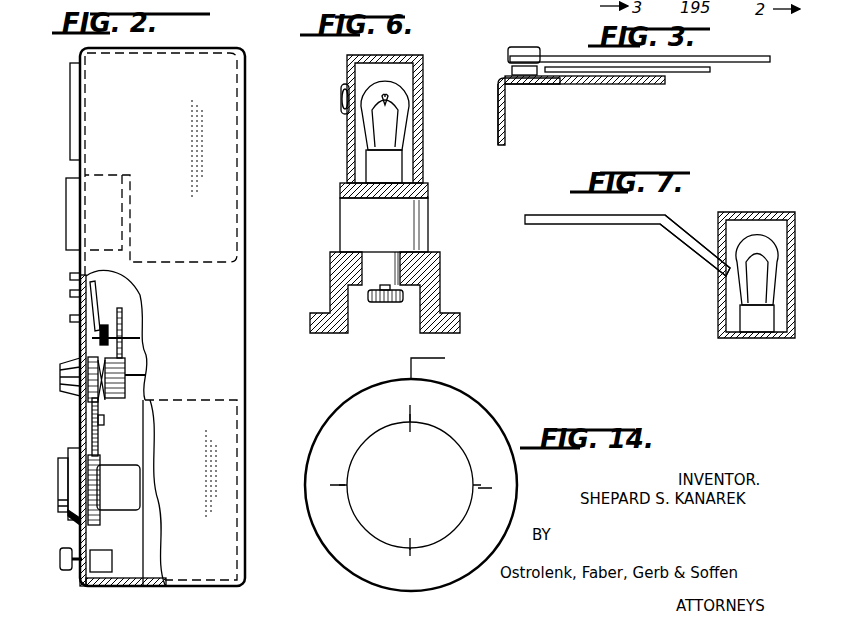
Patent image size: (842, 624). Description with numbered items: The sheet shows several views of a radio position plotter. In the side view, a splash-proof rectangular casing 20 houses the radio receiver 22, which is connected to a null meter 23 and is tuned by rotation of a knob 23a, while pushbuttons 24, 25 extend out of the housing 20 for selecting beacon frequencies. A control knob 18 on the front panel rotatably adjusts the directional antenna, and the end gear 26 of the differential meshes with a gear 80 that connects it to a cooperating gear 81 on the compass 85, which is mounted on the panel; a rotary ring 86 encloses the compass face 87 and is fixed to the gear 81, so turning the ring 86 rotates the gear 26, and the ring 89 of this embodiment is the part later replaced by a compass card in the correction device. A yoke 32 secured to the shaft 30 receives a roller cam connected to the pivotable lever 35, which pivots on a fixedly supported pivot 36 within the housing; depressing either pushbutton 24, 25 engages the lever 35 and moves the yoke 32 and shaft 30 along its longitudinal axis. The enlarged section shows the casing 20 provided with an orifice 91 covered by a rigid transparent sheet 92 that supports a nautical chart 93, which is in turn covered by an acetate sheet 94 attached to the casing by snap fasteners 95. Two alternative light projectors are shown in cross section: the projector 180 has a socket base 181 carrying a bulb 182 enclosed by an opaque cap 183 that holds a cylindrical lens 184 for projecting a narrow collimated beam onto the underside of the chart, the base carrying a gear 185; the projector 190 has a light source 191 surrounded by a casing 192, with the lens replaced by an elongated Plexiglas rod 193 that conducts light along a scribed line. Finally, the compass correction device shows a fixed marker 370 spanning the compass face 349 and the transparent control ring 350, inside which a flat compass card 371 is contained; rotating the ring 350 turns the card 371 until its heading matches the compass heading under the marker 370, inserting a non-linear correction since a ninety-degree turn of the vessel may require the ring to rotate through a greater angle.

In FIG. 2, the radio receiver 22 is at (223, 165).
In FIG. 2, the null meter 23 is at (66, 210).
In FIG. 2, the knob 23a is at (70, 276).
In FIG. 2, the pushbutton 24 is at (70, 293).
In FIG. 2, the pushbutton 25 is at (70, 318).
In FIG. 2, the casing 20 is at (80, 406).
In FIG. 3, the casing 20 is at (505, 132).
In FIG. 2, the shaft 30 is at (145, 345).
In FIG. 2, the pivot 36 is at (102, 298).
In FIG. 2, the pivotable lever 35 is at (100, 312).
In FIG. 2, the yoke 32 is at (90, 338).
In FIG. 2, the end gear 26 is at (106, 360).
In FIG. 2, the control knob 18 is at (60, 376).
In FIG. 2, the gear 80 is at (100, 410).
In FIG. 2, the ring 89 is at (76, 440).
In FIG. 2, the compass face 87 is at (56, 465).
In FIG. 2, the compass 85 is at (56, 492).
In FIG. 2, the rotary ring 86 is at (70, 520).
In FIG. 2, the gear 81 is at (100, 517).
In FIG. 6, the light projector 180 is at (346, 165).
In FIG. 6, the bulb 182 is at (405, 86).
In FIG. 6, the opaque cap 183 is at (424, 148).
In FIG. 6, the cylindrical lens 184 is at (342, 100).
In FIG. 6, the socket base 181 is at (340, 228).
In FIG. 6, the gear 185 is at (382, 303).
In FIG. 3, the orifice 91 is at (504, 102).
In FIG. 3, the transparent sheet 92 is at (622, 86).
In FIG. 3, the nautical chart 93 is at (690, 74).
In FIG. 3, the acetate sheet 94 is at (750, 64).
In FIG. 3, the snap fasteners 95 is at (524, 48).
In FIG. 7, the Plexiglas rod 193 is at (562, 225).
In FIG. 7, the projector 190 is at (704, 272).
In FIG. 7, the casing 192 is at (719, 322).
In FIG. 7, the light bulb 191 is at (756, 232).
In FIG. 14, the transparent control ring 350 is at (345, 553).
In FIG. 14, the compass face 349 is at (345, 500).
In FIG. 14, the compass card 371 is at (345, 452).
In FIG. 14, the fixed marker 370 is at (444, 367).